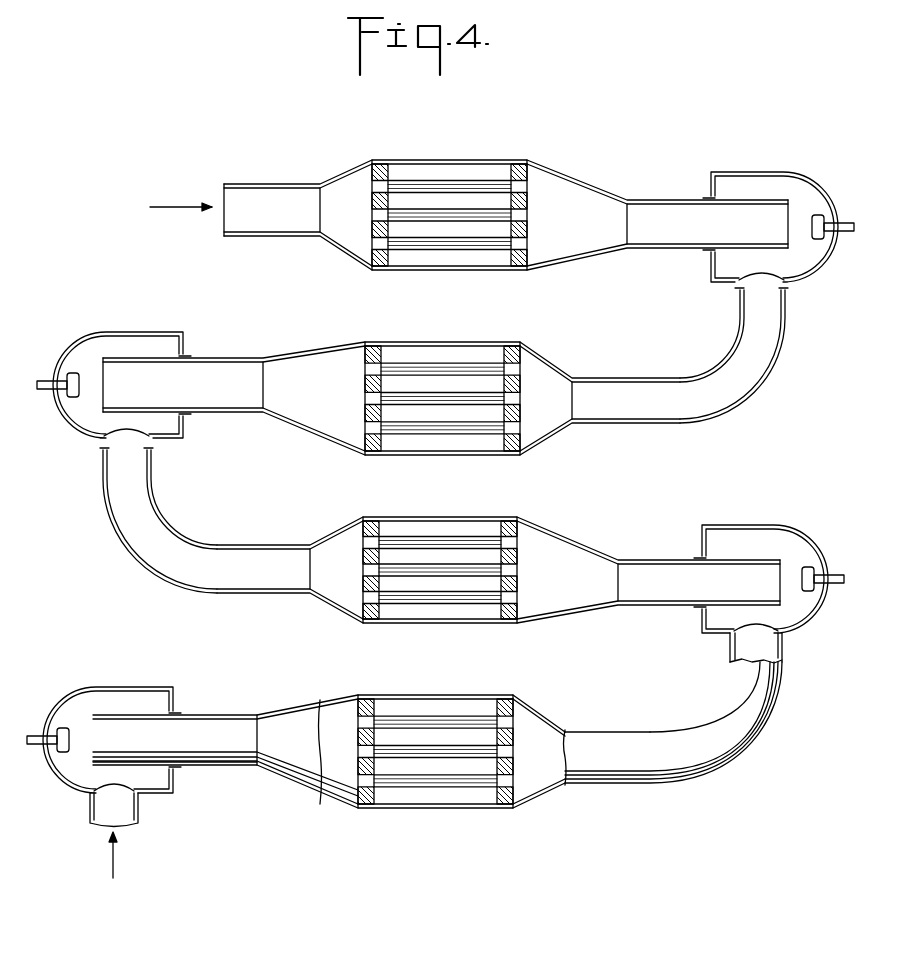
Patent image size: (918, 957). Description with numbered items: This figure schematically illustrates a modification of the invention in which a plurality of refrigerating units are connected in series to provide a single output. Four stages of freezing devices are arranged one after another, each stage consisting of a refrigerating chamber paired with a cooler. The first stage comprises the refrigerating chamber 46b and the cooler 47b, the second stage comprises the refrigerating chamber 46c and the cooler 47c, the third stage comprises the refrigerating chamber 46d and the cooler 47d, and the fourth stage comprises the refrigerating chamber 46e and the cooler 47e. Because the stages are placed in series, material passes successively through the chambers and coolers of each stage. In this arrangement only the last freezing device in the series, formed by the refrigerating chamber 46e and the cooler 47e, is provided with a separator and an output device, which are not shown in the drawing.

The cooler 47e is at (470, 160).
The refrigerating chamber 46e is at (772, 172).
The cooler 47d is at (472, 342).
The refrigerating chamber 46d is at (170, 332).
The cooler 47c is at (432, 626).
The refrigerating chamber 46c is at (779, 525).
The cooler 47b is at (447, 800).
The refrigerating chamber 46b is at (112, 688).